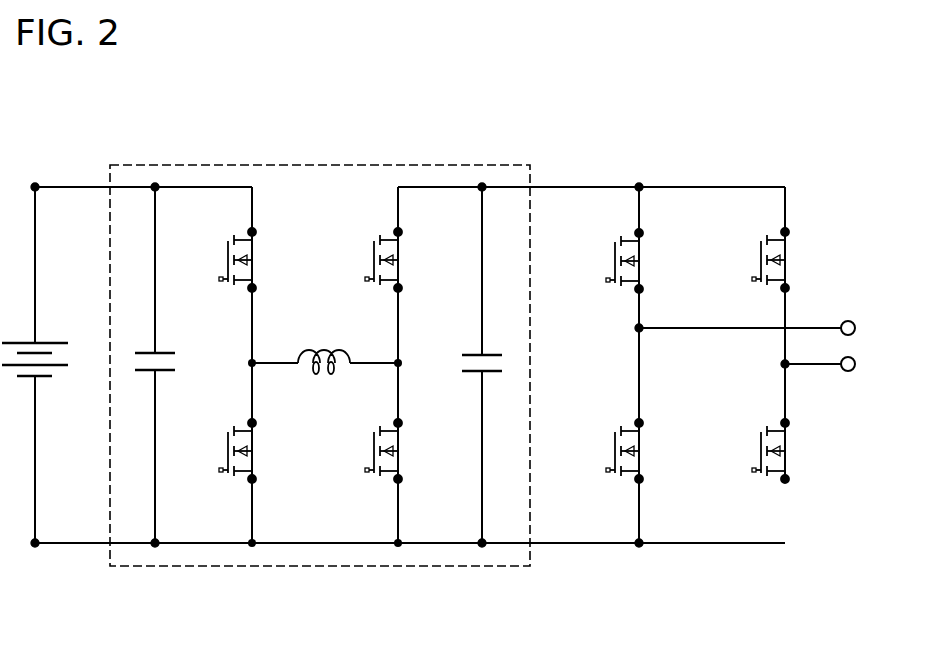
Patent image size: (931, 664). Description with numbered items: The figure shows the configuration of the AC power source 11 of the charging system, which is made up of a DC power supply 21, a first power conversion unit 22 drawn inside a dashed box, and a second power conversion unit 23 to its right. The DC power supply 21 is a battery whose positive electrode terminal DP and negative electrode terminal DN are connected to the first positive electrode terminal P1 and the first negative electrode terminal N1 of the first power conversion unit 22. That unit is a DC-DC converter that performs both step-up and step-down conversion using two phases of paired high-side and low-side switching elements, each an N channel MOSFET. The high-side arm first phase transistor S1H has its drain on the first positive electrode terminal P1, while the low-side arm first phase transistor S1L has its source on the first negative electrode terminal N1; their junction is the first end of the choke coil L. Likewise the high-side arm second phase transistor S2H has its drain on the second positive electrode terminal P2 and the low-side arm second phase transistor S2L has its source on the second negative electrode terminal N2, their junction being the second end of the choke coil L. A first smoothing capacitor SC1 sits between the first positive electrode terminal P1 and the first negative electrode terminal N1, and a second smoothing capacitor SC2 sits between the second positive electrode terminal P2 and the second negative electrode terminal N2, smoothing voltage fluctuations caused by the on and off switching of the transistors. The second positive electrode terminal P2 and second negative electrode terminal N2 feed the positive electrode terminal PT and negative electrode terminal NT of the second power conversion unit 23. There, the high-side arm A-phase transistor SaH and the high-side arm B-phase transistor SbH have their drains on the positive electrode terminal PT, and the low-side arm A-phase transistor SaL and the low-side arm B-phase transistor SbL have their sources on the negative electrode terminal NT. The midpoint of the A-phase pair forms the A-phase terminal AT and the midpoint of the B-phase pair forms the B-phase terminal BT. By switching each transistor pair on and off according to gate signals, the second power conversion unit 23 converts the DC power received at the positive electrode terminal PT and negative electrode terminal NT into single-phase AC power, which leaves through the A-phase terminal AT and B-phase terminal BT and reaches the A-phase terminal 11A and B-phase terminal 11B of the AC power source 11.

The AC power source 11 is at (775, 137).
The A-phase terminal 11A is at (848, 321).
The B-phase terminal 11B is at (848, 371).
The DC power supply 21 is at (50, 342).
The first power conversion unit 22 is at (320, 164).
The second power conversion unit 23 is at (717, 176).
The positive electrode terminal DP is at (36, 183).
The negative electrode terminal DN is at (35, 547).
The first positive electrode terminal P1 is at (155, 183).
The first negative electrode terminal N1 is at (155, 547).
The second positive electrode terminal P2 is at (482, 183).
The second negative electrode terminal N2 is at (482, 547).
The positive electrode terminal PT is at (639, 183).
The negative electrode terminal NT is at (639, 547).
The high-side arm first phase transistor S1H is at (227, 248).
The low-side arm first phase transistor S1L is at (227, 438).
The high-side arm second phase transistor S2H is at (373, 248).
The low-side arm second phase transistor S2L is at (373, 438).
The high-side arm A-phase transistor SaH is at (614, 249).
The low-side arm A-phase transistor SaL is at (614, 439).
The high-side arm B-phase transistor SbH is at (760, 248).
The low-side arm B-phase transistor SbL is at (760, 438).
The first smoothing capacitor SC1 is at (165, 353).
The second smoothing capacitor SC2 is at (470, 355).
The choke coil L is at (325, 350).
The A-phase terminal AT is at (635, 326).
The B-phase terminal BT is at (781, 364).